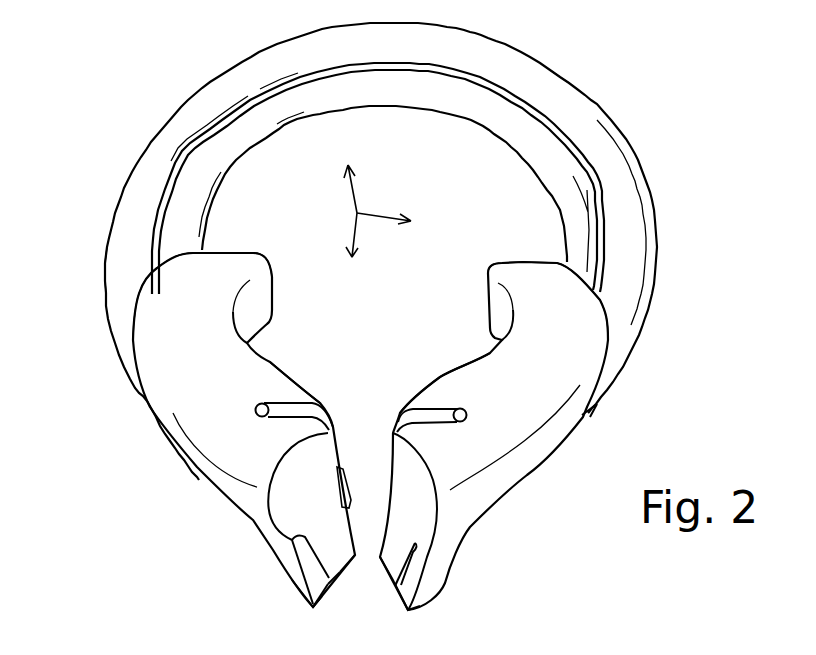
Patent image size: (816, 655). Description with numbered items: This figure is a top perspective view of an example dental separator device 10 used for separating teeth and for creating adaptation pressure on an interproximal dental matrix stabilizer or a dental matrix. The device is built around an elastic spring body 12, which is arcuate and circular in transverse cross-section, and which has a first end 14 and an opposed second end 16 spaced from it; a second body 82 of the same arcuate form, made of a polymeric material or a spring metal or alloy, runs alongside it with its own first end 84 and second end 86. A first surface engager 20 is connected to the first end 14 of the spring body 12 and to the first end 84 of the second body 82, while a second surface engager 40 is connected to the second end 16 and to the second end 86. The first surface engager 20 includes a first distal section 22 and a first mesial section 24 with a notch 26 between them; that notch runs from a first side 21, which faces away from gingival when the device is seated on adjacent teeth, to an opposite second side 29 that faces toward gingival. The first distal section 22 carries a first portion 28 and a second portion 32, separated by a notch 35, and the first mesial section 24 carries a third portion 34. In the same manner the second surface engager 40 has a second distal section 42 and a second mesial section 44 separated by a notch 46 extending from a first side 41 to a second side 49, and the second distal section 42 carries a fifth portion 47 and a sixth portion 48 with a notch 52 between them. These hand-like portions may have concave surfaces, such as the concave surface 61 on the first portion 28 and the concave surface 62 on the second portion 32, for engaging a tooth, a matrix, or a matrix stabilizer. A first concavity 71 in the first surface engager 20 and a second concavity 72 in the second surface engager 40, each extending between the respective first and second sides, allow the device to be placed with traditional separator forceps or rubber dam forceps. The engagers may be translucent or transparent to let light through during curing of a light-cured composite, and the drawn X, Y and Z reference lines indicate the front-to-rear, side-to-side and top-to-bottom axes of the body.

The dental separator device 10 is at (722, 138).
The elastic spring body 12 is at (430, 97).
The first end 14 is at (193, 248).
The second end 16 is at (578, 270).
The first surface engager 20 is at (165, 393).
The first side 21 is at (213, 375).
The first distal section 22 is at (267, 450).
The first mesial section 24 is at (278, 385).
The notch 26 is at (270, 415).
The first portion 28 is at (292, 592).
The second side 29 is at (345, 568).
The second portion 32 is at (355, 555).
The third portion 34 is at (343, 480).
The notch 35 is at (328, 570).
The second surface engager 40 is at (517, 430).
The first side 41 is at (525, 400).
The second distal section 42 is at (433, 470).
The second mesial section 44 is at (459, 391).
The notch 46 is at (463, 422).
The fifth portion 47 is at (412, 588).
The sixth portion 48 is at (396, 563).
The second side 49 is at (381, 560).
The notch 52 is at (415, 557).
The concave surface 61 is at (293, 538).
The concave surface 62 is at (336, 537).
The first concavity 71 is at (247, 343).
The second concavity 72 is at (495, 347).
The second body 82 is at (577, 108).
The first end 84 is at (137, 363).
The second end 86 is at (605, 378).